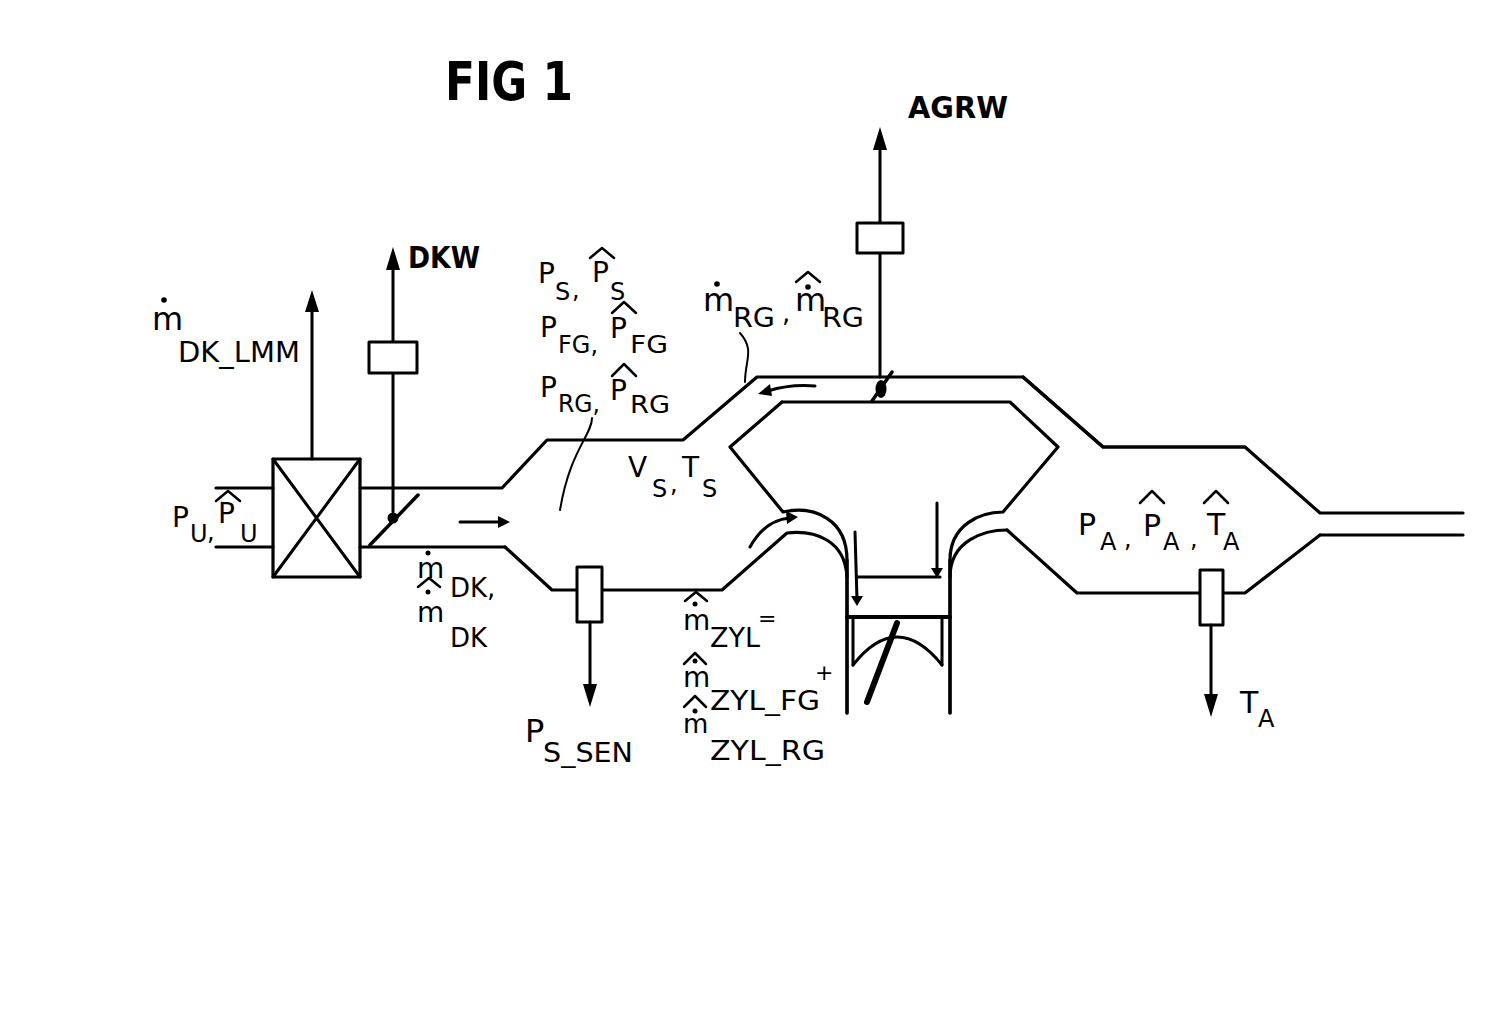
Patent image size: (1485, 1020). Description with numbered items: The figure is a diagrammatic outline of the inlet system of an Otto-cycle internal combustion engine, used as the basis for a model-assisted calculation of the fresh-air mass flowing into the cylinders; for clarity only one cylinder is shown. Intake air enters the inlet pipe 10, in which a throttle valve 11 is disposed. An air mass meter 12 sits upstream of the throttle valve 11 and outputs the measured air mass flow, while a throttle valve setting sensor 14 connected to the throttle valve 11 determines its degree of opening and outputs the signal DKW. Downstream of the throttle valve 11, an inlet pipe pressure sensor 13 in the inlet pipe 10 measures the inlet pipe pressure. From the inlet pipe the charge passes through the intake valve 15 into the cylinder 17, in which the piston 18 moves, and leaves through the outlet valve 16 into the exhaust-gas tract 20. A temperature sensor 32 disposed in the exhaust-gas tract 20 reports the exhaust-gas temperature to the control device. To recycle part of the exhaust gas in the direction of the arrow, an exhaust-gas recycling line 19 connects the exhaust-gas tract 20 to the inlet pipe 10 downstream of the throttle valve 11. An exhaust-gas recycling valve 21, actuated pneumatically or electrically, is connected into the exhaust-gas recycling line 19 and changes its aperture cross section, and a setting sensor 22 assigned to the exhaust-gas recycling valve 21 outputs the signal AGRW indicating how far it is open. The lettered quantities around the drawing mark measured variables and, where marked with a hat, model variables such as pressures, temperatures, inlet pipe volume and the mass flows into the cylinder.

The inlet pipe 10 is at (545, 557).
The throttle valve 11 is at (418, 493).
The air mass meter 12 is at (307, 567).
The inlet pipe pressure sensor 13 is at (597, 598).
The throttle valve setting sensor 14 is at (417, 357).
The intake valve 15 is at (857, 542).
The outlet valve 16 is at (946, 492).
The cylinder 17 is at (940, 593).
The piston 18 is at (930, 637).
The exhaust-gas recycling line 19 is at (1080, 443).
The exhaust-gas tract 20 is at (1135, 580).
The exhaust-gas recycling valve 21 is at (893, 377).
The setting sensor 22 is at (895, 243).
The temperature sensor 32 is at (1217, 603).